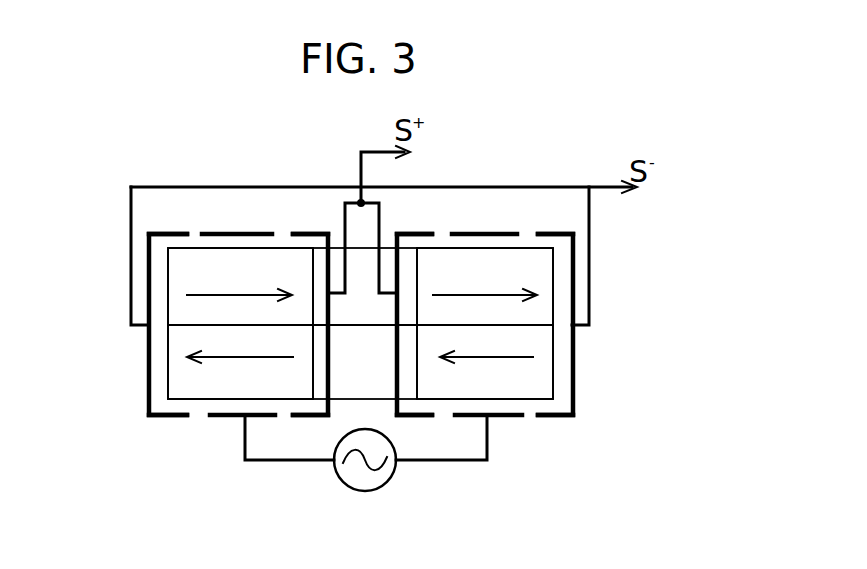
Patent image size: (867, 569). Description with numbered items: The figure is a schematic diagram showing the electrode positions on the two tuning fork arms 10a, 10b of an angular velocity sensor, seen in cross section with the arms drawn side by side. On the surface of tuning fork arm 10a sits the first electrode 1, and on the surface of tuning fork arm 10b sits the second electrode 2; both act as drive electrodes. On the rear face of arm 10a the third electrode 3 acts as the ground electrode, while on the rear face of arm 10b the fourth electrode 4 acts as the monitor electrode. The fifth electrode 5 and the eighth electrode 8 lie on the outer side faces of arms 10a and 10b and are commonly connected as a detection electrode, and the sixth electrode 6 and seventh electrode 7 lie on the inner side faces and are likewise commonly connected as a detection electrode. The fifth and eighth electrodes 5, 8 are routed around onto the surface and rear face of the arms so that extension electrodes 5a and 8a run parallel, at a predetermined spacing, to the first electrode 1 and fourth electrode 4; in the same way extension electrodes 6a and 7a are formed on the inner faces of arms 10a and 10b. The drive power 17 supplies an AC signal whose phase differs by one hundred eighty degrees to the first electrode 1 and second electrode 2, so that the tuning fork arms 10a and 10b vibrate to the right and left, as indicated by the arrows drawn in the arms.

The first electrode 1 is at (225, 418).
The second electrode 2 is at (497, 418).
The third electrode 3 is at (245, 232).
The fourth electrode 4 is at (468, 230).
The fifth electrode 5 is at (147, 356).
The extension electrode 5a is at (167, 232).
The sixth electrode 6 is at (330, 367).
The extension electrode 6a is at (308, 232).
The seventh electrode 7 is at (396, 355).
The extension electrode 7a is at (417, 228).
The eighth electrode 8 is at (577, 358).
The extension electrode 8a is at (558, 232).
The tuning fork arm 10a is at (187, 263).
The tuning fork arm 10b is at (515, 272).
The drive power 17 is at (395, 472).